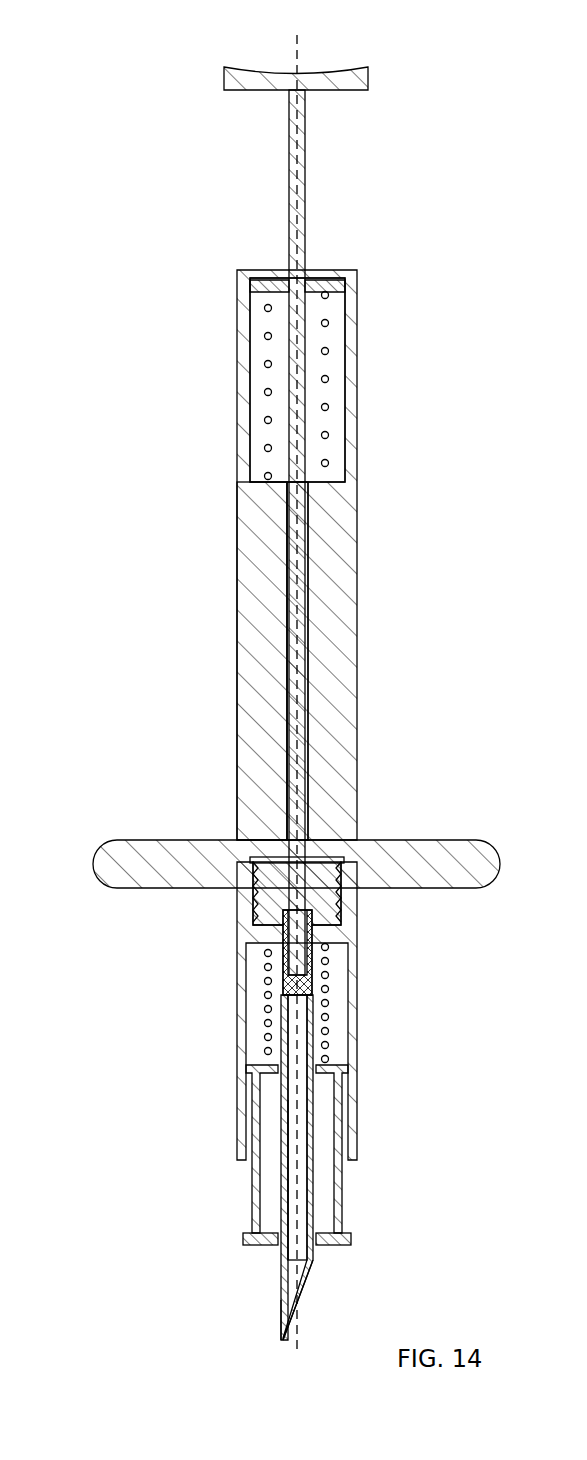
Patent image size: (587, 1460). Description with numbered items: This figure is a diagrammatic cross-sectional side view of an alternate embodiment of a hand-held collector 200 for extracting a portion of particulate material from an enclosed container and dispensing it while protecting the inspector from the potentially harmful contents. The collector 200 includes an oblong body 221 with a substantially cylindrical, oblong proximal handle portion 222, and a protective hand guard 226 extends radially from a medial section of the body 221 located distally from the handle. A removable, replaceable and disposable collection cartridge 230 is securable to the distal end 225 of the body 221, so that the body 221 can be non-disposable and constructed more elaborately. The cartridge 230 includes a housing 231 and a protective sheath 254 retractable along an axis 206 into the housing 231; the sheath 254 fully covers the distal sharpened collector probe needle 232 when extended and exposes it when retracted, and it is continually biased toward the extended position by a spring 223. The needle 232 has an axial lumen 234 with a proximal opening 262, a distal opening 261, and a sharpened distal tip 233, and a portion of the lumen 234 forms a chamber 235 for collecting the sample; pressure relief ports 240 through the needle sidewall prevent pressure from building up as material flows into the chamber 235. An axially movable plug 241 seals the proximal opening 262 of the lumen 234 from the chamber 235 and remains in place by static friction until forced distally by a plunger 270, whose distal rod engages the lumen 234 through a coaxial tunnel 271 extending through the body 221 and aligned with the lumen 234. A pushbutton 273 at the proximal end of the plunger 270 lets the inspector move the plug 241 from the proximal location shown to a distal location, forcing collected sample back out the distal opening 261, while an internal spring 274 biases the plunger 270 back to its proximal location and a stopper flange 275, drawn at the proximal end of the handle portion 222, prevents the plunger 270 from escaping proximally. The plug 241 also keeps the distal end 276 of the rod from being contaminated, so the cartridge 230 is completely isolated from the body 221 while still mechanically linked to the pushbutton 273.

The hand-held collector 200 is at (128, 355).
The axis 206 is at (300, 48).
The oblong body 221 is at (250, 618).
The proximal handle portion 222 is at (357, 700).
The spring 223 is at (325, 1050).
The distal end 225 is at (345, 908).
The protective hand guard 226 is at (432, 840).
The collection cartridge 230 is at (72, 992).
The housing 231 is at (357, 1022).
The collector probe needle 232 is at (302, 1180).
The sharpened distal tip 233 is at (281, 1343).
The axial lumen 234 is at (312, 1142).
The chamber 235 is at (290, 1215).
The pressure relief ports 240 is at (268, 1030).
The axially movable plug 241 is at (330, 978).
The protective sheath 254 is at (345, 1210).
The distal opening 261 is at (308, 1292).
The proximal opening 262 is at (257, 907).
The plunger 270 is at (300, 447).
The coaxial tunnel 271 is at (307, 526).
The pushbutton 273 is at (368, 75).
The internal spring 274 is at (325, 352).
The cap plate 275 is at (340, 290).
The distal end of the rod 276 is at (287, 975).